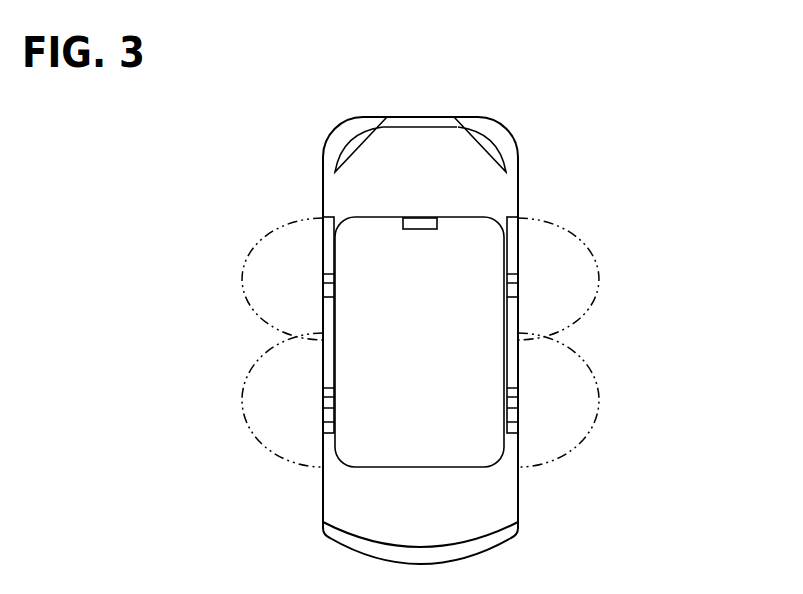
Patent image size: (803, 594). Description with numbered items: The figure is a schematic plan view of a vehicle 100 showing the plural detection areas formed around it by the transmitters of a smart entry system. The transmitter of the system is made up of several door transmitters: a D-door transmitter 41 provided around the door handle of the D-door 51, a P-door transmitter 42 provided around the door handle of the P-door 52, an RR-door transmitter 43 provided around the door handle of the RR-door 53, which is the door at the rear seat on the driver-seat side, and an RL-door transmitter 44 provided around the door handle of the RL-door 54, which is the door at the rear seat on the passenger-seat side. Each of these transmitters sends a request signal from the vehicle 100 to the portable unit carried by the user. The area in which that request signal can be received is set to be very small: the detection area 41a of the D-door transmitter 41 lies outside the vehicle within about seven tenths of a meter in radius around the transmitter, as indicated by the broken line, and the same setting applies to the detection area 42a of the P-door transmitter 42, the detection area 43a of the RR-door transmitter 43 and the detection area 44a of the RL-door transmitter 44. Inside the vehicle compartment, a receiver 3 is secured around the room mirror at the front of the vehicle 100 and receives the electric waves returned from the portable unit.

The vehicle 100 is at (308, 118).
The receiver 3 is at (421, 229).
The D-door transmitter 41 is at (514, 283).
The P-door transmitter 42 is at (327, 282).
The RR-door transmitter 43 is at (514, 398).
The RL-door transmitter 44 is at (327, 398).
The detection area of the D-door transmitter 41a is at (600, 262).
The detection area of the P-door transmitter 42a is at (242, 262).
The detection area of the RR-door transmitter 43a is at (600, 400).
The detection area of the RL-door transmitter 44a is at (241, 402).
The D-door 51 is at (514, 234).
The P-door 52 is at (327, 232).
The RR-door 53 is at (514, 423).
The RL-door 54 is at (327, 425).